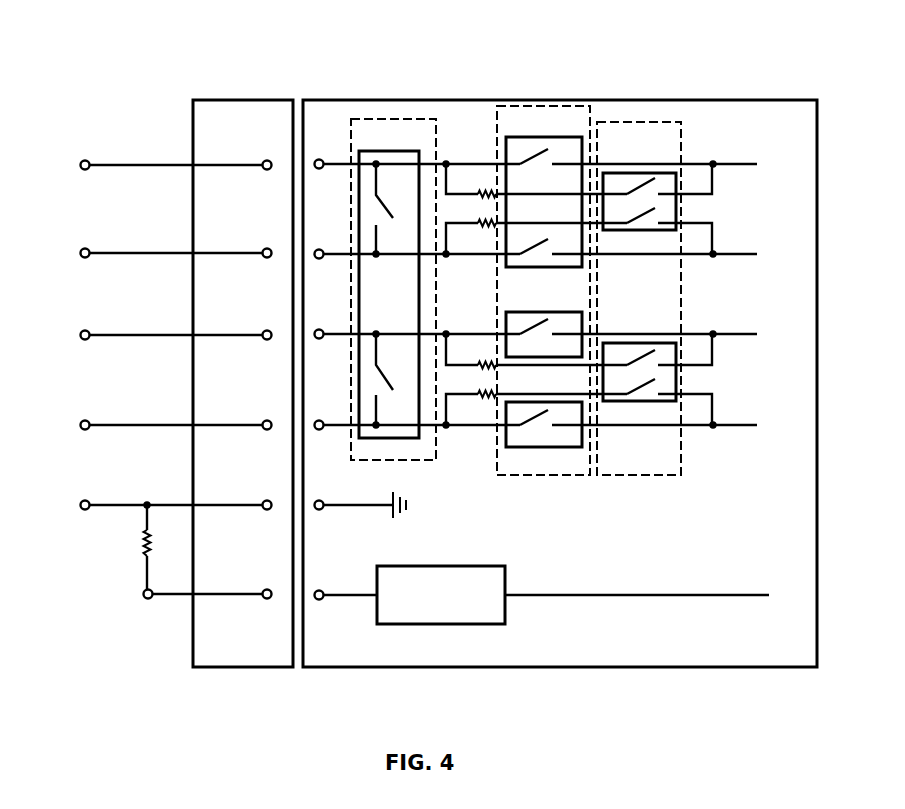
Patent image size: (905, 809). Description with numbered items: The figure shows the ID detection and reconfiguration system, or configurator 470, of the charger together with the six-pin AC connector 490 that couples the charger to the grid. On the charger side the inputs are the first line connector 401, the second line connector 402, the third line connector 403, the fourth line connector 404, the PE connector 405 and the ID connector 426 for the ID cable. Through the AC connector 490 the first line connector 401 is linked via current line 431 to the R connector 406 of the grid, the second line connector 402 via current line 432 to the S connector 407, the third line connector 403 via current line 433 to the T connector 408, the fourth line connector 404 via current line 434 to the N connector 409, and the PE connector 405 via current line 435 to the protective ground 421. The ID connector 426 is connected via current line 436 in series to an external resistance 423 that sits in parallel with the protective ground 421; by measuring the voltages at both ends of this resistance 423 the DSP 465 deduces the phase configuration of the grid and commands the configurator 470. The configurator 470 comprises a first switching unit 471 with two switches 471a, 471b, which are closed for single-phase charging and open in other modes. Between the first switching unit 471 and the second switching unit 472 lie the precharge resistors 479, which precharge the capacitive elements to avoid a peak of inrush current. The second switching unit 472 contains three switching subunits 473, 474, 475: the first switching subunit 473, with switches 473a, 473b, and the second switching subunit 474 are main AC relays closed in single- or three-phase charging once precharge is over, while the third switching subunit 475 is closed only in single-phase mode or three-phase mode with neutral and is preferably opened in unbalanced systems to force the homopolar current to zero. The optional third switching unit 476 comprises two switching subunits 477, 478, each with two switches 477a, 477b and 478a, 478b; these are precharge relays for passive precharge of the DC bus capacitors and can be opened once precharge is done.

The AC connector 490 is at (243, 365).
The R connector of the grid 406 is at (170, 155).
The S connector of the grid 407 is at (170, 243).
The T connector of the grid 408 is at (169, 325).
The N connector of the grid 409 is at (170, 415).
The protective ground of the grid 421 is at (169, 495).
The external resistance 423 is at (125, 547).
The current line 431 is at (238, 155).
The current line 432 is at (238, 243).
The current line 433 is at (238, 325).
The current line 434 is at (238, 415).
The current line 435 is at (238, 495).
The current line 436 is at (208, 584).
The L1 connector 401 is at (532, 169).
The L2 connector 402 is at (532, 259).
The L3 connector 403 is at (532, 339).
The L4 connector 404 is at (532, 431).
The PE connector 405 is at (371, 511).
The ID connector 426 is at (344, 581).
The DSP 465 is at (564, 595).
The configurator 470 is at (543, 268).
The first switching unit 471 is at (378, 112).
The switch 471a is at (376, 233).
The switch 471b is at (376, 405).
The second switching unit 472 is at (582, 98).
The first switching subunit 473 is at (544, 202).
The switch 473a is at (542, 172).
The switch 473b is at (542, 267).
The second switching subunit 474 is at (544, 336).
The third switching subunit 475 is at (544, 427).
The third switching unit 476 is at (671, 112).
The switching subunit 477 is at (677, 201).
The switch 477a is at (668, 194).
The switch 477b is at (670, 223).
The switching subunit 478 is at (678, 372).
The switch 478a is at (668, 365).
The switch 478b is at (670, 394).
The resistors 479 is at (536, 294).